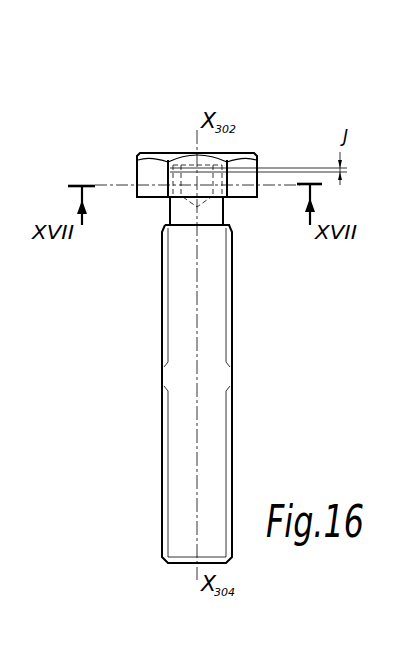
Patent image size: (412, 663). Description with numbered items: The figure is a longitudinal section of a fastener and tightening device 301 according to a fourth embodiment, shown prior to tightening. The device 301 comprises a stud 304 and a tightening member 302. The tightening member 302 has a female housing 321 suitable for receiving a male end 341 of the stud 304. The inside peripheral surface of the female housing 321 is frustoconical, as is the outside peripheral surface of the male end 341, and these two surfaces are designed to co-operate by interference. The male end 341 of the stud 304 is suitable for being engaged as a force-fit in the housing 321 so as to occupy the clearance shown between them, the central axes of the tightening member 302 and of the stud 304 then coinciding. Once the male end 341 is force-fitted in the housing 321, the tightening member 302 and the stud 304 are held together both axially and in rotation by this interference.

The device 301 is at (268, 152).
The tightening member 302 is at (244, 162).
The female housing 321 is at (183, 173).
The male end 341 is at (217, 213).
The stud 304 is at (207, 320).